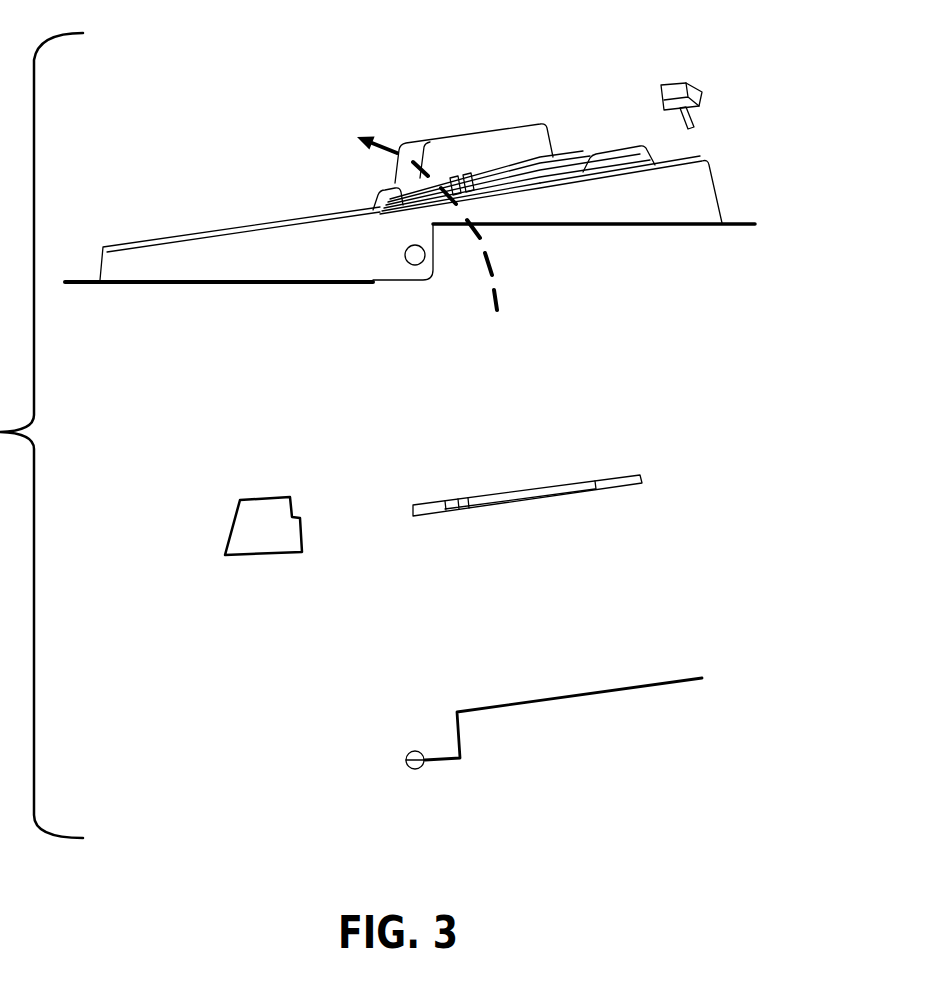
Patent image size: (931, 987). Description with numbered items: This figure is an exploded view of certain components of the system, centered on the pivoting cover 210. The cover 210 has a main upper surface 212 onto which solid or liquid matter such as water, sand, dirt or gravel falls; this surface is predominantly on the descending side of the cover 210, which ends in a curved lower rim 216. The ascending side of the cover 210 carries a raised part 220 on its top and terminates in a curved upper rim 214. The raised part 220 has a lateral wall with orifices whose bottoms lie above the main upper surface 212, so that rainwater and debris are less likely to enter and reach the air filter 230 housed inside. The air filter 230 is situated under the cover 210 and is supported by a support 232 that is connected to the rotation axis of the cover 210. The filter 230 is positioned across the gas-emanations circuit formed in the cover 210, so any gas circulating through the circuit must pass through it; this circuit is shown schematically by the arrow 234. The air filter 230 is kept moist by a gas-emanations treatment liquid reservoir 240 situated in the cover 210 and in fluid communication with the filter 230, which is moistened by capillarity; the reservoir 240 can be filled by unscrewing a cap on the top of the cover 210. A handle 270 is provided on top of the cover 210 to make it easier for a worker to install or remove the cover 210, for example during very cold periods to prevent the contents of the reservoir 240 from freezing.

The cover 210 is at (213, 112).
The main upper surface 212 is at (170, 240).
The curved upper rim 214 is at (738, 220).
The curved lower rim 216 is at (83, 283).
The raised part 220 is at (493, 143).
The air filter 230 is at (613, 477).
The support 232 is at (668, 680).
The arrow 234 is at (488, 253).
The gas-emanations treatment liquid reservoir 240 is at (263, 505).
The handle 270 is at (698, 93).